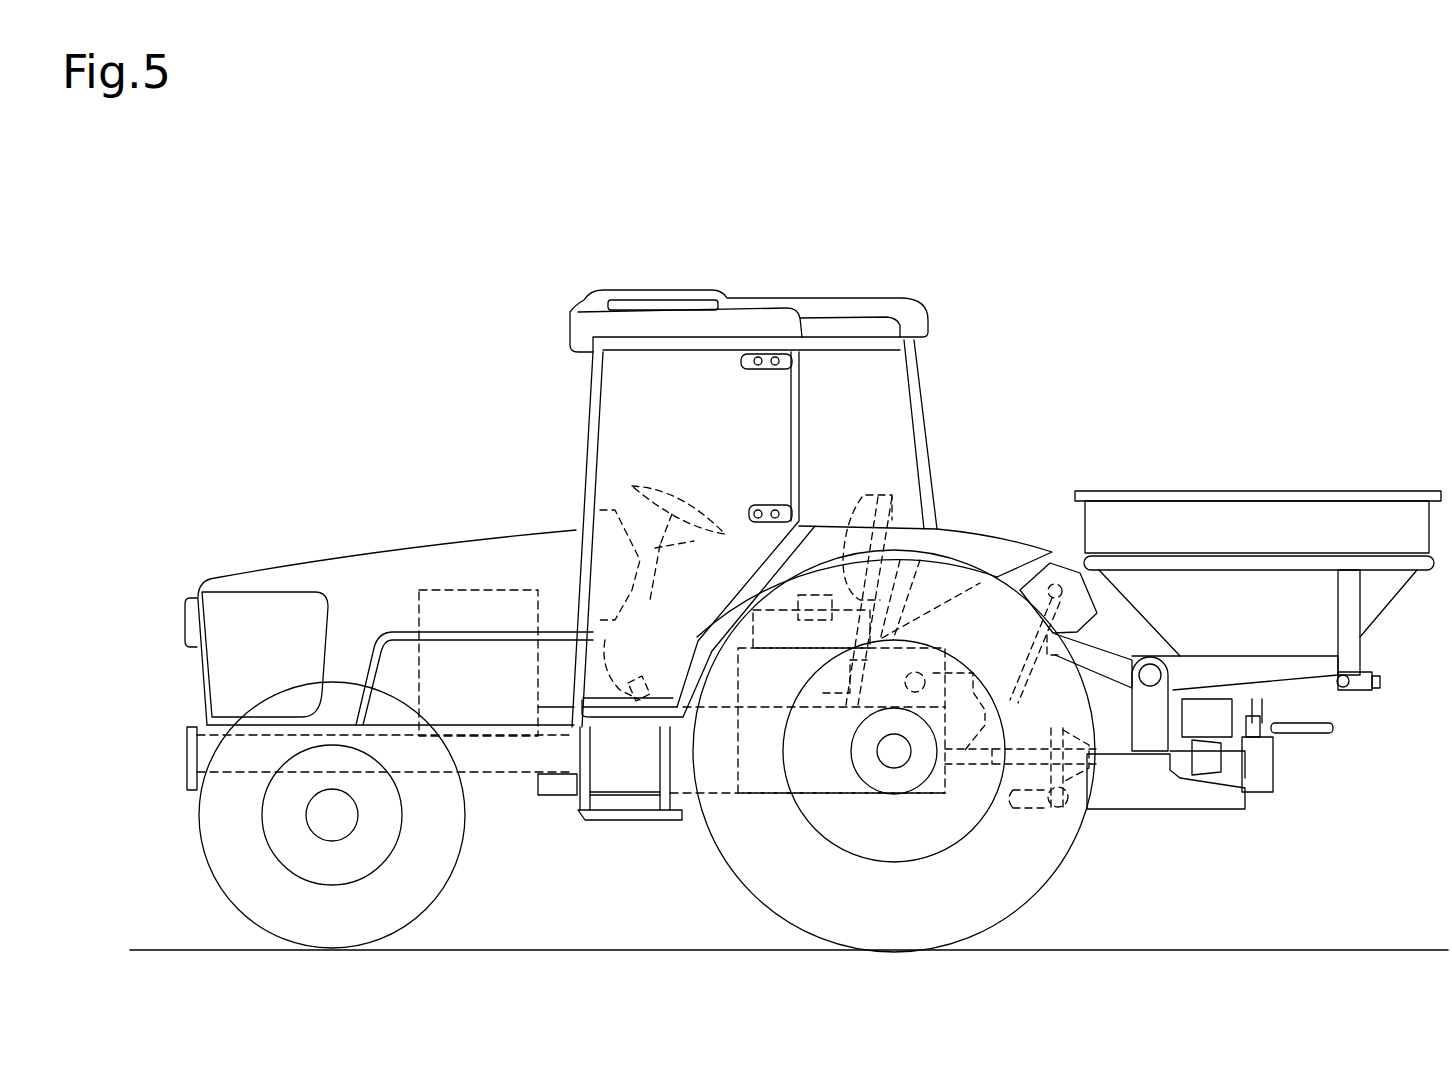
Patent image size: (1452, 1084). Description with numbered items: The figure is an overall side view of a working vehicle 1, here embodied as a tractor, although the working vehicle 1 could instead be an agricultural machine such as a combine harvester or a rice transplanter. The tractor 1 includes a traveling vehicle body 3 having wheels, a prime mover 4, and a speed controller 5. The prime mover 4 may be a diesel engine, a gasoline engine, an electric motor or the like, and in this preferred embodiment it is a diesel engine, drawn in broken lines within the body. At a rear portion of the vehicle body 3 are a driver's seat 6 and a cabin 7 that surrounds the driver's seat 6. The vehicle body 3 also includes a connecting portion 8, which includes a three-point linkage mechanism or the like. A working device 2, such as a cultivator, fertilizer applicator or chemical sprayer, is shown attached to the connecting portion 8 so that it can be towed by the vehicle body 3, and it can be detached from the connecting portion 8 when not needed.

The working vehicle 1 is at (868, 243).
The working device 2 is at (1312, 482).
The vehicle body 3 is at (497, 783).
The prime mover 4 is at (540, 675).
The speed controller 5 is at (688, 762).
The driver's seat 6 is at (890, 490).
The cabin 7 is at (926, 424).
The connecting portion 8 is at (1007, 663).